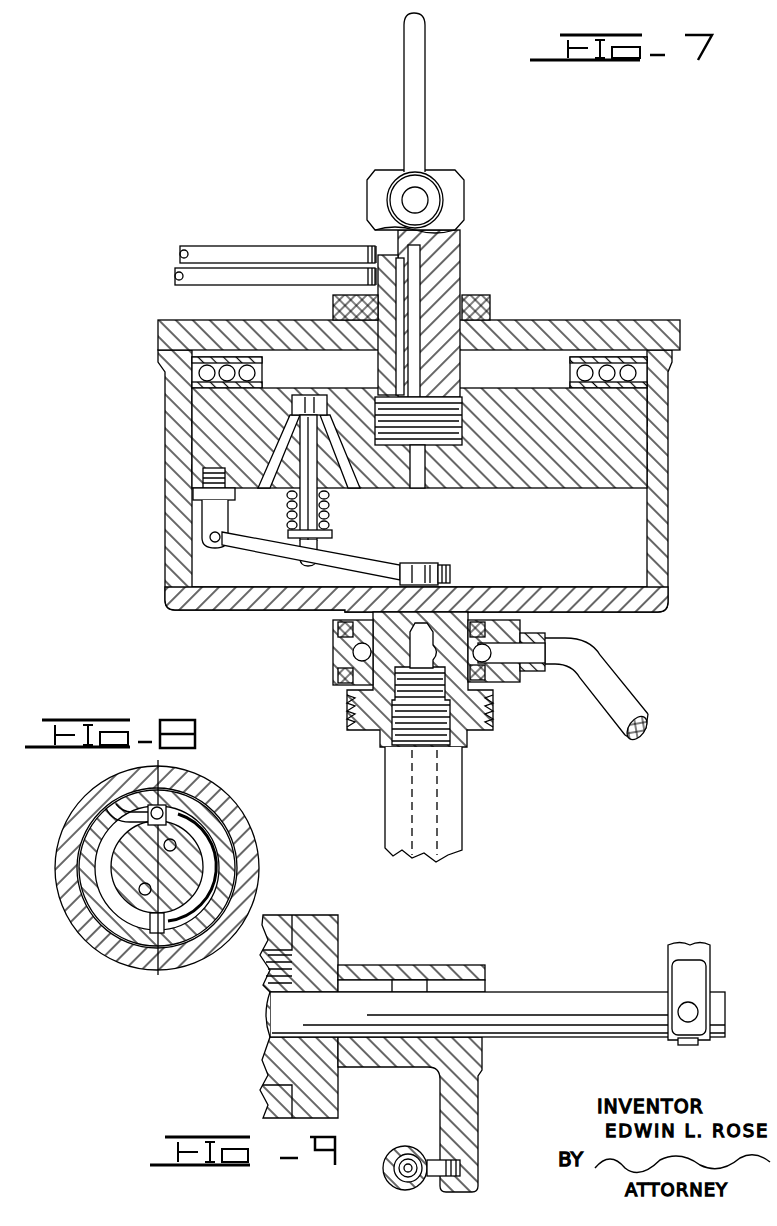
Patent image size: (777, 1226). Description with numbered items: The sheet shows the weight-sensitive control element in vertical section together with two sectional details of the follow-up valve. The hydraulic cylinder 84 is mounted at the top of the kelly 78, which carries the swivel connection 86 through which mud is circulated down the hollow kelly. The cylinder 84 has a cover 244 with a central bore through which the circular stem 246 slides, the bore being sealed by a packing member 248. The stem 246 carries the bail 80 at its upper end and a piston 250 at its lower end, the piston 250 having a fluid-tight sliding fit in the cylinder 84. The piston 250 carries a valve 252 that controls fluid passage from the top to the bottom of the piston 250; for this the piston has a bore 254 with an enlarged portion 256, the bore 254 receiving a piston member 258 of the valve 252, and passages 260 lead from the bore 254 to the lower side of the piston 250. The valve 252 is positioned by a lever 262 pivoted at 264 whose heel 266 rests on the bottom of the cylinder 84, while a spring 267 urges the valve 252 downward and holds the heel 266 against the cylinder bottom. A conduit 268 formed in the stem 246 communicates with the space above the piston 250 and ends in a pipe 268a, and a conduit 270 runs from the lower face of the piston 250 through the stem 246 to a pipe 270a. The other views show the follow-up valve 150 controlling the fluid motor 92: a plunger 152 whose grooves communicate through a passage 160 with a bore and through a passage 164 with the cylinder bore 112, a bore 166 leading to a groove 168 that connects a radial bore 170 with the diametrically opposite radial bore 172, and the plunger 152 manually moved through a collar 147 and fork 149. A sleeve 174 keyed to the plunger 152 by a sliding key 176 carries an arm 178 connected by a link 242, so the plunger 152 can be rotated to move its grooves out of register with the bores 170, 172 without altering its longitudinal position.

In FIG. 7, the kelly 78 is at (455, 800).
In FIG. 7, the bail 80 is at (407, 100).
In FIG. 7, the hydraulic cylinder 84 is at (668, 478).
In FIG. 7, the swivel connection 86 is at (335, 646).
In FIG. 8, the fluid motor 92 is at (128, 962).
In FIG. 9, the fluid motor 92 is at (355, 902).
In FIG. 9, the cylinder bore 112 is at (262, 1070).
In FIG. 9, the collar 147 is at (688, 1044).
In FIG. 9, the fork 149 is at (705, 975).
In FIG. 8, the follow-up valve 150 is at (122, 870).
In FIG. 9, the plunger 152 is at (558, 1010).
In FIG. 8, the passage 160 is at (175, 842).
In FIG. 8, the passage 164 is at (143, 893).
In FIG. 8, the bore 166 is at (166, 810).
In FIG. 8, the groove 168 is at (212, 858).
In FIG. 8, the radial bore 170 is at (112, 803).
In FIG. 8, the radial bore 172 is at (160, 933).
In FIG. 9, the sleeve 174 is at (462, 968).
In FIG. 9, the sliding key 176 is at (405, 980).
In FIG. 9, the arm 178 is at (478, 1115).
In FIG. 9, the link 242 is at (403, 1146).
In FIG. 7, the cover 244 is at (577, 320).
In FIG. 7, the stem 246 is at (460, 258).
In FIG. 7, the packing member 248 is at (470, 305).
In FIG. 7, the piston 250 is at (577, 478).
In FIG. 7, the valve 252 is at (300, 500).
In FIG. 7, the bore 254 is at (322, 405).
In FIG. 7, the enlarged portion 256 is at (292, 396).
In FIG. 7, the piston member 258 is at (308, 400).
In FIG. 7, the passages 260 is at (275, 470).
In FIG. 7, the lever 262 is at (392, 565).
In FIG. 7, the pivot 264 is at (215, 545).
In FIG. 7, the heel 266 is at (445, 575).
In FIG. 7, the spring 267 is at (328, 510).
In FIG. 7, the conduit 268 is at (392, 297).
In FIG. 7, the pipe 268a is at (192, 282).
In FIG. 7, the conduit 270 is at (378, 245).
In FIG. 7, the pipe 270a is at (215, 246).